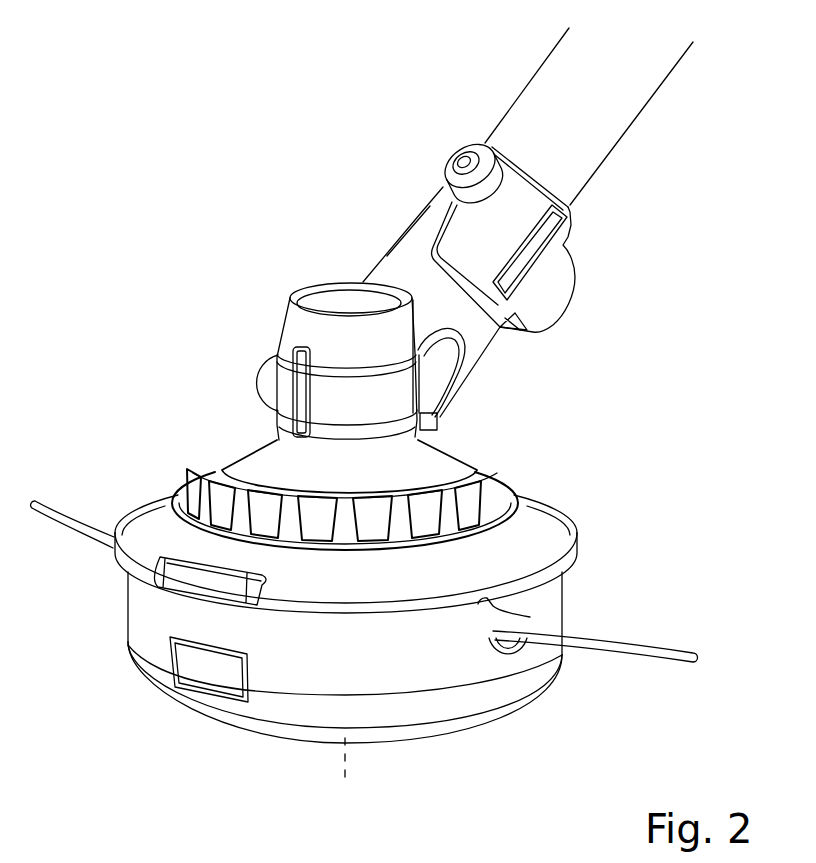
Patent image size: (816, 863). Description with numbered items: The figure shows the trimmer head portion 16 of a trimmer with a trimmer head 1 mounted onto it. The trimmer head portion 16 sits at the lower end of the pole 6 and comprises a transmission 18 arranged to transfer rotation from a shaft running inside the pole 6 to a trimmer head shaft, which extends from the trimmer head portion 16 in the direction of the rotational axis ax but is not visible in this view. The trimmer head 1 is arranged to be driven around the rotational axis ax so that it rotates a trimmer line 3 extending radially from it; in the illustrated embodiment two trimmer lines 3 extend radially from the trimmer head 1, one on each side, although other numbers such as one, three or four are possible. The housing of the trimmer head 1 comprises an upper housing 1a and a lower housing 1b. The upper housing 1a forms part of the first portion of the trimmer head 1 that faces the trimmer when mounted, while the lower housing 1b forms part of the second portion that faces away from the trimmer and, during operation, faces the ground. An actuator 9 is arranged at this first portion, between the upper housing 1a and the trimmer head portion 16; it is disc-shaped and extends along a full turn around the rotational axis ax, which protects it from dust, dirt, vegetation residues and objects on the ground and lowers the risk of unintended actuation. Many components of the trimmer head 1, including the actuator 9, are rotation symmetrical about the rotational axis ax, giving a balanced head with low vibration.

The trimmer head 1 is at (364, 530).
The upper housing 1a is at (540, 525).
The lower housing 1b is at (147, 637).
The trimmer line 3 is at (63, 518).
The pole 6 is at (607, 103).
The actuator 9 is at (490, 498).
The trimmer head portion 16 is at (325, 210).
The transmission 18 is at (283, 390).
The rotational axis ax is at (345, 757).